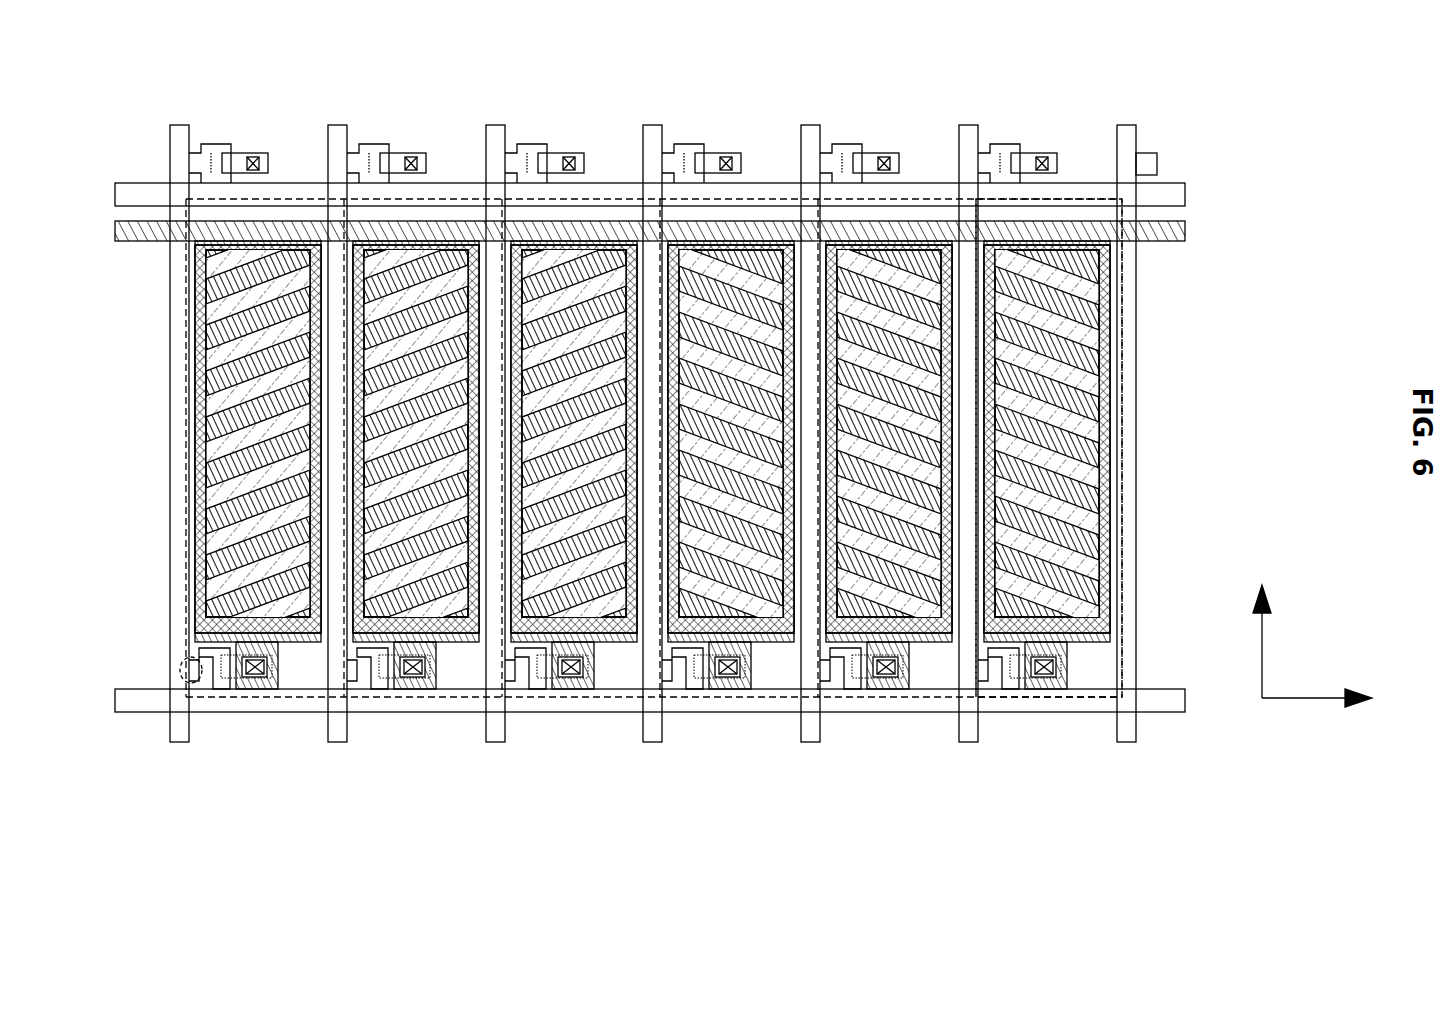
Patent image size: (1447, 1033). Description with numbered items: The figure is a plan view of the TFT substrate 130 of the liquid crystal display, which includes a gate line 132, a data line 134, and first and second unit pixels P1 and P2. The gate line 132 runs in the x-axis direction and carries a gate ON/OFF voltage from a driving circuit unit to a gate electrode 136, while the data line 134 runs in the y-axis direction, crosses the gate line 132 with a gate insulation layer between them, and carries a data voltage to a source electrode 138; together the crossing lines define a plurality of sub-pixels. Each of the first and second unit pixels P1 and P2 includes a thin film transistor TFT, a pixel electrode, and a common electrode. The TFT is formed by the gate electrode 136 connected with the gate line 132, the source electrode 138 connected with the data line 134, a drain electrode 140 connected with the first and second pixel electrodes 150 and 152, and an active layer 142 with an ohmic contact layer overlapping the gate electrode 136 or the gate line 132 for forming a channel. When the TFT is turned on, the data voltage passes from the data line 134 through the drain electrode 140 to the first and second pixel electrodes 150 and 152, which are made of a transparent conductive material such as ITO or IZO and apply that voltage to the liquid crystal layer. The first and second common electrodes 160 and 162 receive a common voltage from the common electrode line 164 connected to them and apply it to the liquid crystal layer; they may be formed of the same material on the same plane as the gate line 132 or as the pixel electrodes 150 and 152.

The TFT substrate 130 is at (1231, 88).
The gate line 132 is at (137, 713).
The data line 134 is at (170, 428).
The gate electrode 136 is at (385, 682).
The source electrode 138 is at (348, 708).
The drain electrode 140 is at (408, 683).
The semiconductor layer 142 is at (425, 713).
The first pixel electrode 150 is at (557, 572).
The second pixel electrode 152 is at (716, 570).
The first common electrode 160 is at (610, 525).
The second common electrode 162 is at (765, 525).
The common electrode line 164 is at (460, 222).
The first unit pixel P1 is at (606, 199).
The second unit pixel P2 is at (1080, 199).
The thin film transistor TFT is at (203, 695).